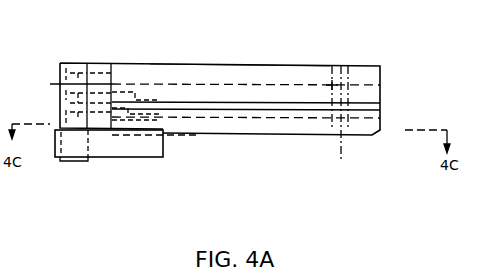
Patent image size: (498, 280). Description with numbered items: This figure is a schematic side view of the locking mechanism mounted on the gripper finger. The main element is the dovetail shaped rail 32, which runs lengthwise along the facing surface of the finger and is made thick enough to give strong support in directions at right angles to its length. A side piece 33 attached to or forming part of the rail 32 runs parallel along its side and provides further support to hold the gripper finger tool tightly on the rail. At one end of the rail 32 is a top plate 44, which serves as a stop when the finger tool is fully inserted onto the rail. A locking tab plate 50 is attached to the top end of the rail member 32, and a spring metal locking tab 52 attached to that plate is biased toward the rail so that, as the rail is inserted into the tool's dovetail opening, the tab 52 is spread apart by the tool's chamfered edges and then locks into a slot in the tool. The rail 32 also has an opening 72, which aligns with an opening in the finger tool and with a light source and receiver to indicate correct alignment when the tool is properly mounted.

The dovetail shaped rail 32 is at (255, 135).
The side piece 33 is at (255, 64).
The top plate 44 is at (100, 62).
The locking tab plate 50 is at (72, 62).
The locking tab 52 is at (125, 147).
The opening 72 is at (341, 65).